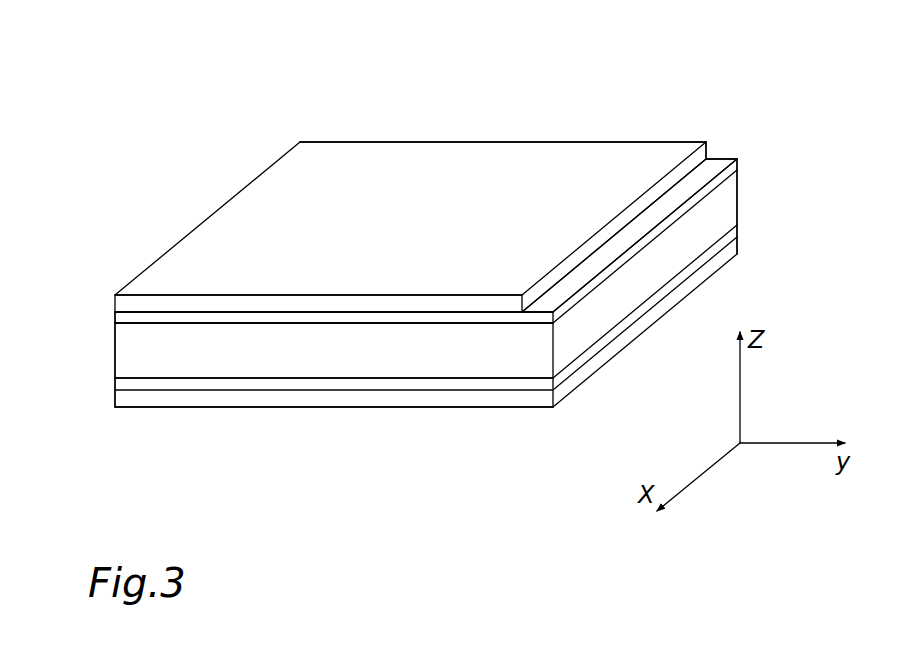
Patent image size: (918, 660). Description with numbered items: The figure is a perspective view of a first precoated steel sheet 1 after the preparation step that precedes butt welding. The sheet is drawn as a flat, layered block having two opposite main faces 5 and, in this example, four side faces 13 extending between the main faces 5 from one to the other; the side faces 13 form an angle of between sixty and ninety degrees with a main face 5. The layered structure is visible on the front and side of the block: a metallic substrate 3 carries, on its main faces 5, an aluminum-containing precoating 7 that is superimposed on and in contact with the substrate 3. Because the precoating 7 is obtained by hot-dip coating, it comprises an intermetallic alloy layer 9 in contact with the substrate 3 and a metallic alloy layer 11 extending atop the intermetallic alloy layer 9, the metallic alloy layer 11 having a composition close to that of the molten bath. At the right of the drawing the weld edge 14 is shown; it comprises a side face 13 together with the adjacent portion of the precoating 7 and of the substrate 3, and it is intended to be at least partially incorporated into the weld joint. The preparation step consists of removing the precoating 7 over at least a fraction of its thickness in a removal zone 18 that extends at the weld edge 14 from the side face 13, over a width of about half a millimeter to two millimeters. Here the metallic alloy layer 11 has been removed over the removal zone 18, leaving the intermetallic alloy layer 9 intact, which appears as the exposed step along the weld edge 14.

The first precoated steel sheet 1 is at (256, 136).
The metallic substrate 3 is at (130, 355).
The main face 5 is at (435, 221).
The aluminum-containing precoating 7 is at (37, 277).
The intermetallic alloy layer 9 is at (122, 318).
The metallic alloy layer 11 is at (128, 302).
The side face 13 is at (731, 207).
The weld edge 14 is at (719, 147).
The removal zone 18 is at (557, 294).